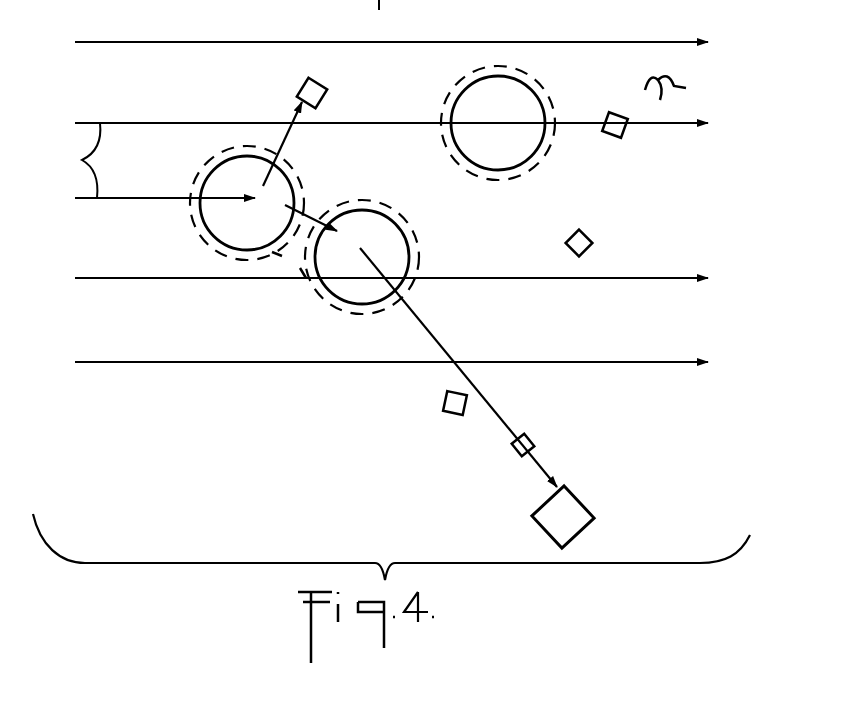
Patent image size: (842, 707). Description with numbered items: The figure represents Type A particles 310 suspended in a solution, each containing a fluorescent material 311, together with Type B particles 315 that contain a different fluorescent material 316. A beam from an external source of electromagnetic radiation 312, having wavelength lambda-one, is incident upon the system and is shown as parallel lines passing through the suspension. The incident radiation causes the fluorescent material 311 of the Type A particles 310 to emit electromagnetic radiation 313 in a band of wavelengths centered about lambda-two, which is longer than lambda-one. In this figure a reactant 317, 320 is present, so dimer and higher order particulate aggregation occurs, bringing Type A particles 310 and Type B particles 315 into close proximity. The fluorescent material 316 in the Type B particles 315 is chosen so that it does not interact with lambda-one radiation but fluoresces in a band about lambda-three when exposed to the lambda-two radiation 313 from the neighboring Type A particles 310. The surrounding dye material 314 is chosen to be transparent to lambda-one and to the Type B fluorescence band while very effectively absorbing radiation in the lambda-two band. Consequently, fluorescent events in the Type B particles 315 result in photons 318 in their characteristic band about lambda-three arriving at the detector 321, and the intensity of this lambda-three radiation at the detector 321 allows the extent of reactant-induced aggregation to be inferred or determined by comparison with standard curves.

The Type A particle 310 is at (250, 160).
The fluorescent material 311 is at (222, 162).
The external source of electromagnetic radiation 312 is at (69, 160).
The electromagnetic radiation 313 is at (296, 112).
The dye material 314 is at (460, 414).
The Type B particle 315 is at (502, 88).
The fluorescent material 316 is at (470, 112).
The reactant 317 is at (560, 74).
The photons 318 is at (510, 422).
The reactant 320 is at (291, 276).
The detector 321 is at (583, 503).